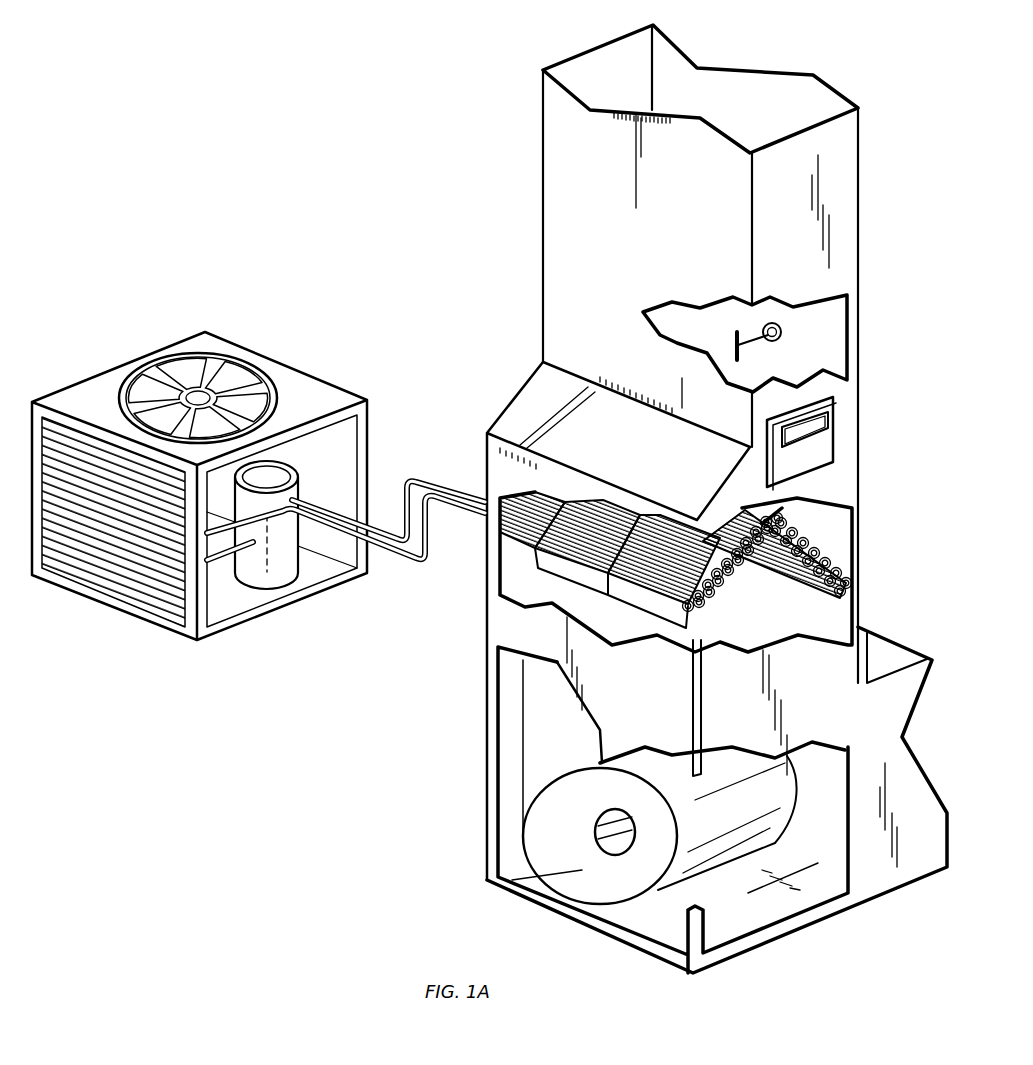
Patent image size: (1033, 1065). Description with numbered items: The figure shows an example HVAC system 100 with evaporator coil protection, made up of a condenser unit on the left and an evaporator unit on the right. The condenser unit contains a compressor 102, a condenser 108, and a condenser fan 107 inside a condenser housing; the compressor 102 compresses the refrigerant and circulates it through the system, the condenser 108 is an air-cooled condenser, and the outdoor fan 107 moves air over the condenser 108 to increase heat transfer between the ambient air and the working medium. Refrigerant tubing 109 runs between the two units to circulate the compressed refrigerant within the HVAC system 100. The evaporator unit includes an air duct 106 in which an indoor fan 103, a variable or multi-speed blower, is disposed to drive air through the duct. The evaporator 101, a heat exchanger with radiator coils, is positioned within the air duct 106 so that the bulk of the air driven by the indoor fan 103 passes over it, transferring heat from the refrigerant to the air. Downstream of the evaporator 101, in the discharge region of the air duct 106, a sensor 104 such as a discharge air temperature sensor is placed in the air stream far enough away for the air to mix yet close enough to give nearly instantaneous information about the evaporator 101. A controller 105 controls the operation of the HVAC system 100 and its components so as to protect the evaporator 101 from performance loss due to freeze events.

The HVAC system 100 is at (436, 318).
The evaporator 101 is at (817, 535).
The compressor 102 is at (277, 562).
The indoor fan 103 is at (582, 862).
The sensor 104 is at (758, 345).
The controller 105 is at (830, 444).
The air duct 106 is at (587, 278).
The condenser fan 107 is at (135, 373).
The condenser 108 is at (132, 570).
The refrigerant tubing 109 is at (427, 474).